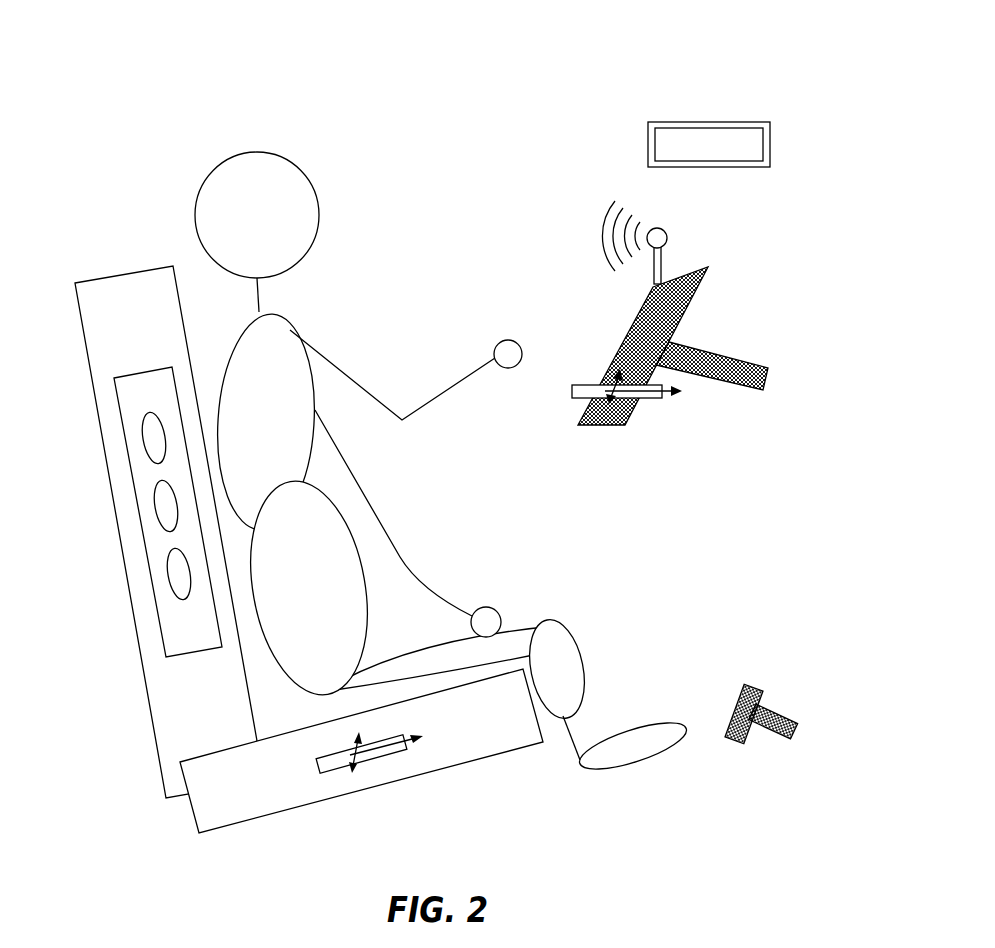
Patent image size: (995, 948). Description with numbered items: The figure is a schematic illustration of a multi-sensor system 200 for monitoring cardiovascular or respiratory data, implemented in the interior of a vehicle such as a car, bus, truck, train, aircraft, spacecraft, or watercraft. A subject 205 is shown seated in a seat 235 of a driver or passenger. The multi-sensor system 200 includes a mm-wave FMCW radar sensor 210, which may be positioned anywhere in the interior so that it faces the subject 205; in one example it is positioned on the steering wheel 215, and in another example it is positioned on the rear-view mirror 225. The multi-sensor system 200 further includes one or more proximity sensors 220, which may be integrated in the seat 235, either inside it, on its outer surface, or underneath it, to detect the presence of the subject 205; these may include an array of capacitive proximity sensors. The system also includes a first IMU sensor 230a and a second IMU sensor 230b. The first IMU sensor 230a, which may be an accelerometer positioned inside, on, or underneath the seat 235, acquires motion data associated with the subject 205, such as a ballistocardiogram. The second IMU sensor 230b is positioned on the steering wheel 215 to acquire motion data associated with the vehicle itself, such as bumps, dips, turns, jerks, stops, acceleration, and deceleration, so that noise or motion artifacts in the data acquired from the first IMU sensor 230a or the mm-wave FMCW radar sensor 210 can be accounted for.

The multi-sensor system 200 is at (484, 78).
The subject 205 is at (203, 175).
The mm-wave FMCW radar sensor 210 is at (665, 232).
The steering wheel 215 is at (692, 313).
The proximity sensors 220 is at (135, 491).
The rear-view mirror 225 is at (770, 135).
The first IMU sensor 230a is at (389, 757).
The second IMU sensor 230b is at (650, 398).
The seat 235 is at (165, 715).